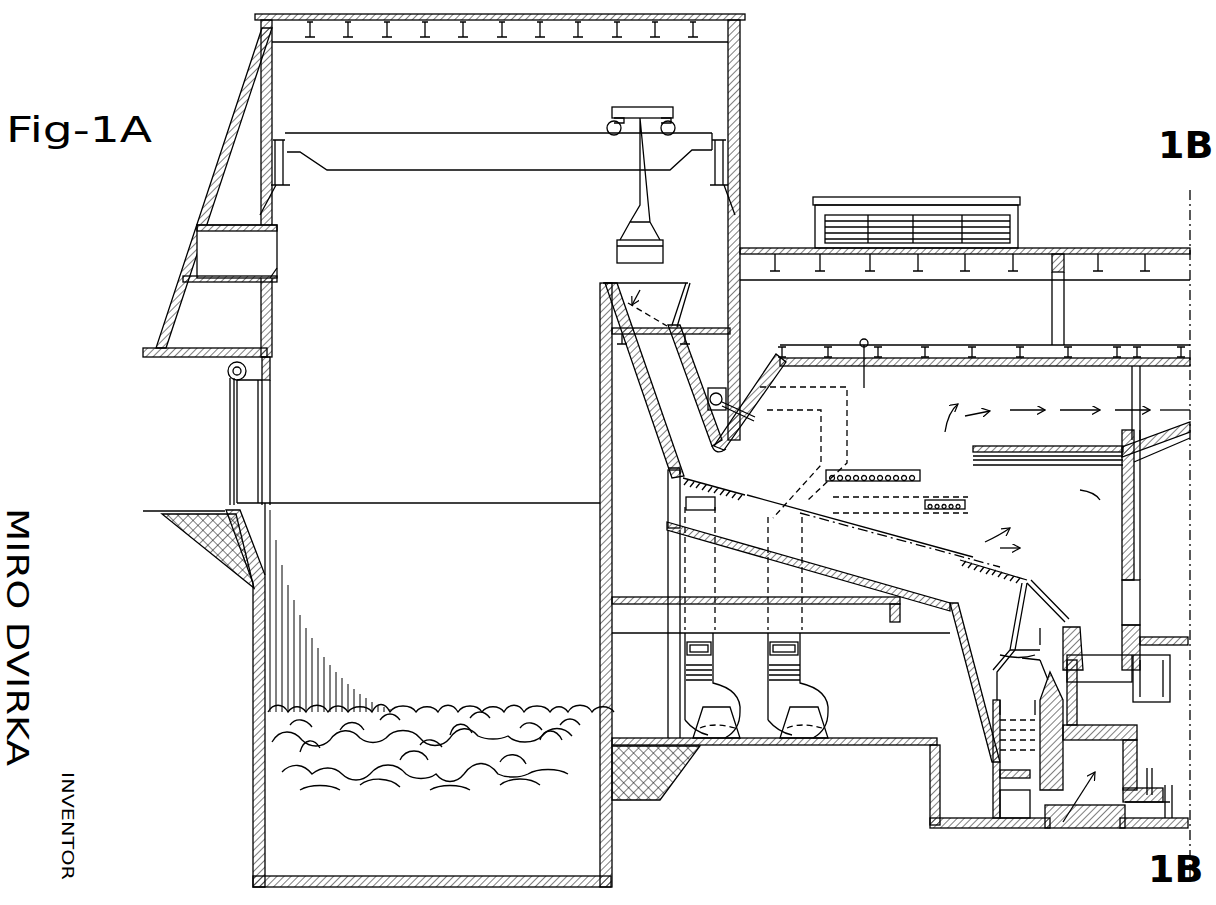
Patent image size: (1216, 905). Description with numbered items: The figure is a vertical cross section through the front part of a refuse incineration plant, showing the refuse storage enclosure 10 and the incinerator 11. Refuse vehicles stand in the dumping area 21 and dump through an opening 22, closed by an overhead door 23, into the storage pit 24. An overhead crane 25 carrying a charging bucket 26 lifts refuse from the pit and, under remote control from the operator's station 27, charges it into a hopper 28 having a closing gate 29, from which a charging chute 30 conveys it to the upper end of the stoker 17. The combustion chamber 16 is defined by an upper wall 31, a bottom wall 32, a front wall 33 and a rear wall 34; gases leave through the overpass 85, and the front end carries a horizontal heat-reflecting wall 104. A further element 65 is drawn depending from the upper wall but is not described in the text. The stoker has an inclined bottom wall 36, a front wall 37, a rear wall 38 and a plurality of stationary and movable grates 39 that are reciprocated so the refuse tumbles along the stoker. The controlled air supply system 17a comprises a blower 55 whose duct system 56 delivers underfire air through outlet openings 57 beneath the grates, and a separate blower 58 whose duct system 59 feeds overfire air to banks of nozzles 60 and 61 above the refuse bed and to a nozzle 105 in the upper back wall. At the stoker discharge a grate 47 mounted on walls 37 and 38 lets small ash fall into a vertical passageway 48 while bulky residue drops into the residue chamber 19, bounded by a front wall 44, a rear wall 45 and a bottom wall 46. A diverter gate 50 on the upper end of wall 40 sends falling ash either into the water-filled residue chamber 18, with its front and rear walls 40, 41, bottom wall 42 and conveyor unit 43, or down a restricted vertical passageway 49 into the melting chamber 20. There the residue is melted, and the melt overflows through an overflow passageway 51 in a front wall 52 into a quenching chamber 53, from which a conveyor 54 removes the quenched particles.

The refuse storage enclosure 10 is at (426, 341).
The incinerator 11 is at (930, 375).
The combustion chamber 16 is at (917, 411).
The stoker 17 is at (762, 474).
The controlled air supply system 17a is at (810, 652).
The residue chamber 18 is at (1010, 695).
The residue chamber 19 is at (1114, 628).
The melting chamber 20 is at (1115, 809).
The dumping area 21 is at (166, 461).
The opening 22 is at (258, 441).
The overhead door 23 is at (230, 406).
The storage pit 24 is at (432, 601).
The overhead crane 25 is at (434, 170).
The charging bucket 26 is at (617, 252).
The operator's station 27 is at (205, 247).
The hopper 28 is at (605, 300).
The closing gate 29 is at (688, 302).
The charging chute 30 is at (650, 396).
The upper wall 31 is at (956, 370).
The bottom wall 32 is at (830, 608).
The front wall 33 is at (1122, 535).
The rear wall 34 is at (668, 558).
The inclined bottom wall 36 is at (748, 562).
The front wall 37 is at (1022, 600).
The rear wall 38 is at (668, 508).
The stationary and movable grates 39 is at (938, 542).
The front wall 40 is at (993, 750).
The rear wall 41 is at (992, 712).
The bottom wall 42 is at (1000, 790).
The conveyor unit 43 is at (1000, 775).
The front wall 44 is at (1120, 650).
The rear wall 45 is at (1078, 690).
The bottom wall 46 is at (1135, 705).
The grate 47 is at (1048, 592).
The vertical passageway 48 is at (1027, 630).
The restricted vertical passageway 49 is at (1060, 748).
The diverter gate 50 is at (1015, 668).
The overflow passageway 51 is at (1145, 770).
The front wall 52 is at (1140, 745).
The quenching chamber 53 is at (1118, 808).
The conveyor 54 is at (1150, 815).
The blower 55 is at (690, 700).
The duct system 56 is at (686, 665).
The outlet openings 57 is at (688, 500).
The blower 58 is at (828, 700).
The duct system 59 is at (770, 660).
The bank of nozzles 60 is at (878, 470).
The bank of nozzles 61 is at (960, 500).
The thermocouple 65 is at (864, 390).
The overpass 85 is at (1172, 398).
The horizontal heat-reflecting wall 104 is at (1036, 452).
The nozzle 105 is at (745, 430).